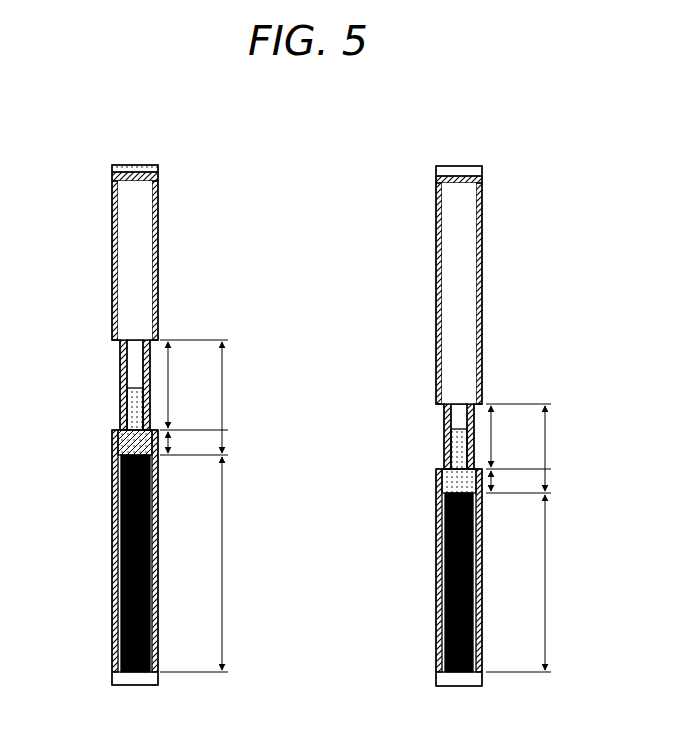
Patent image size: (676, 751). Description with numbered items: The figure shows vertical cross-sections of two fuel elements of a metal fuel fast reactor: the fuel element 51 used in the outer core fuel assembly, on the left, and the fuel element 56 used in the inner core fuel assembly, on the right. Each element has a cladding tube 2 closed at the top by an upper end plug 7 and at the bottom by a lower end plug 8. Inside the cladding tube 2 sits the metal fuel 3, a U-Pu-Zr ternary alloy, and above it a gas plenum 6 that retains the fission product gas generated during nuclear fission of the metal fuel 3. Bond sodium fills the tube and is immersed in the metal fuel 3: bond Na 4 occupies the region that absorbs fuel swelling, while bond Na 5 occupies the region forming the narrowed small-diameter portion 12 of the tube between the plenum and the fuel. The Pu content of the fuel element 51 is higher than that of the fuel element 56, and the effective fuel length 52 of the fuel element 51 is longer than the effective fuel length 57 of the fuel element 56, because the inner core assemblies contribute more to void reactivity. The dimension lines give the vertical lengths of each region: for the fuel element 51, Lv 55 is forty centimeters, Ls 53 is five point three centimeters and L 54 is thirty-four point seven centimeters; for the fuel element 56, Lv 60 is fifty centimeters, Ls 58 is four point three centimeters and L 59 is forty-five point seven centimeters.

The cladding tube 2 is at (158, 218).
The metal fuel 3 is at (135, 560).
The bond Na 4 is at (125, 440).
The bond Na 5 is at (135, 402).
The gas plenum 6 is at (130, 268).
The upper end plug 7 is at (158, 173).
The lower end plug 8 is at (120, 680).
The small-diameter portion 12 is at (122, 358).
The fuel element 51 is at (140, 164).
The effective fuel length 52 is at (240, 557).
The length Ls 53 is at (187, 442).
The length L 54 is at (187, 387).
The length Lv 55 is at (240, 405).
The fuel element 56 is at (463, 165).
The effective fuel length 57 is at (564, 575).
The length Ls 58 is at (510, 482).
The length L 59 is at (510, 432).
The length Lv 60 is at (564, 445).